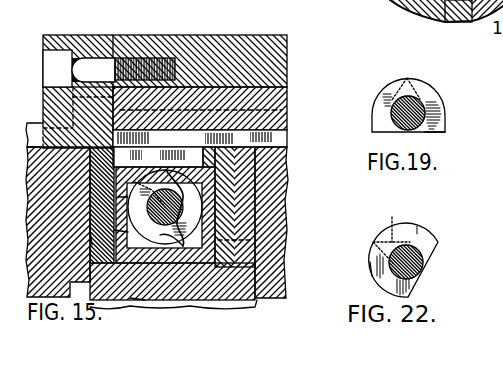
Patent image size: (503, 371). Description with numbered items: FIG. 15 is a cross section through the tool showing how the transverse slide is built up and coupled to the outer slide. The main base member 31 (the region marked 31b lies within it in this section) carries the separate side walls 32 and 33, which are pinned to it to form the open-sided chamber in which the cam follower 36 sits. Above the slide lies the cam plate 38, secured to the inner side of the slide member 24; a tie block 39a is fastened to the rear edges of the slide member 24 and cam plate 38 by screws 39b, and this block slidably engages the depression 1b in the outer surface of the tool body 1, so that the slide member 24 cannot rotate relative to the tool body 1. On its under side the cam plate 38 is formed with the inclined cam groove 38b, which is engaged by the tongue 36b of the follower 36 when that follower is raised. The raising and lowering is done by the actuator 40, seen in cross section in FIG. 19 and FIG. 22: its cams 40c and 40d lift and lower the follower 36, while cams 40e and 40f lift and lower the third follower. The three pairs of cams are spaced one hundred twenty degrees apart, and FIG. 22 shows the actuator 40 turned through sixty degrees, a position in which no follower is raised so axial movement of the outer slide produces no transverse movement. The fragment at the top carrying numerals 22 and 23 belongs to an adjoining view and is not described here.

In FIG. 15, the tool body 1 is at (251, 185).
In FIG. 15, the depression 1b is at (33, 123).
In FIG. 15, the slide member 24 is at (287, 50).
In FIG. 15, the tie block 39a is at (75, 42).
In FIG. 15, the screws 39b is at (133, 75).
In FIG. 15, the cam plate 38 is at (287, 93).
In FIG. 15, the cam groove 38b is at (287, 133).
In FIG. 15, the groove 36b is at (192, 150).
In FIG. 15, the cam follower 36 is at (92, 237).
In FIG. 15, the side wall 32 is at (92, 176).
In FIG. 15, the side wall 33 is at (252, 199).
In FIG. 15, the main base member 31 is at (262, 277).
In FIG. 15, the bottom block part 31b is at (138, 298).
In FIG. 15, the actuator 40 is at (203, 266).
In FIG. 19, the actuator 40 is at (452, 101).
In FIG. 22, the actuator 40 is at (427, 270).
In FIG. 15, the cam 40c is at (116, 230).
In FIG. 15, the cam 40d is at (120, 197).
In FIG. 19, the cam 40e is at (398, 80).
In FIG. 22, the cam 40e is at (393, 230).
In FIG. 19, the cam 40f is at (447, 128).
In FIG. 22, the cam 40f is at (382, 271).
In FIG. 19, the rim 22 is at (410, 14).
In FIG. 19, the insert 23 is at (455, 23).